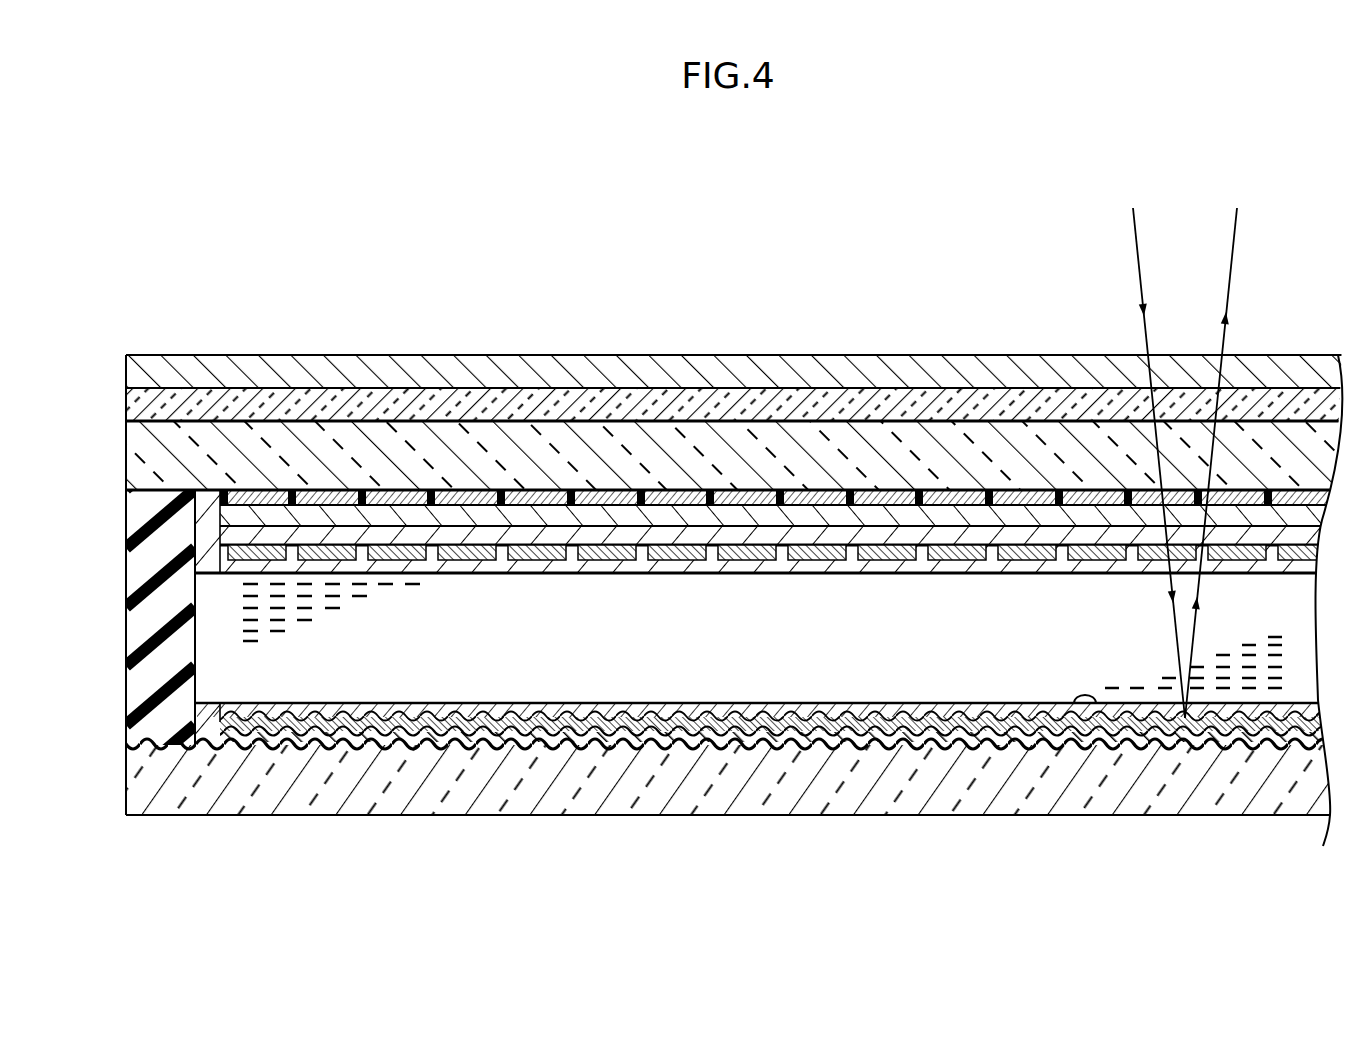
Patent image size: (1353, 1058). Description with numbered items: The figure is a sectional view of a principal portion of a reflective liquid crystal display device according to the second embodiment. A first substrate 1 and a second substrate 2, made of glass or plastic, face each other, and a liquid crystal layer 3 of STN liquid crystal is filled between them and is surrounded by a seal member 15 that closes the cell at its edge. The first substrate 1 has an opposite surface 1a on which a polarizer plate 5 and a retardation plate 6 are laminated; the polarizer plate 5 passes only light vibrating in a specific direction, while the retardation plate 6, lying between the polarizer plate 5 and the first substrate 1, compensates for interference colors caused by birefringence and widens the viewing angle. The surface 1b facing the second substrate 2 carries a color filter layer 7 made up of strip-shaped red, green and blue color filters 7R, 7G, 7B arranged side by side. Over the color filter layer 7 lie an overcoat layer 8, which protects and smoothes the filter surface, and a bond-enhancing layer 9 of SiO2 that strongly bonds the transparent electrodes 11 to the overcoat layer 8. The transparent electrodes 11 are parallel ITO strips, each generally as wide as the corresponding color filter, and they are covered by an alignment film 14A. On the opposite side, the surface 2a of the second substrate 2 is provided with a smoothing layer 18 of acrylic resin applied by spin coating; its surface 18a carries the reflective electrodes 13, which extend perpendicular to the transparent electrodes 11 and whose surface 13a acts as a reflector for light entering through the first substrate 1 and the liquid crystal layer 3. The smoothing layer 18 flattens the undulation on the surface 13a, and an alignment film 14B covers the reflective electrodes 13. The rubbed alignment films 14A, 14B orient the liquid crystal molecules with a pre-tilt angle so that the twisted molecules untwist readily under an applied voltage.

The first substrate 1 is at (455, 435).
The opposite surface of first substrate 1a is at (482, 420).
The surface of first substrate facing second substrate 1b is at (508, 492).
The second substrate 2 is at (433, 813).
The surface of second substrate 2a is at (503, 746).
The liquid crystal layer 3 is at (645, 670).
The polarizer plate 5 is at (171, 368).
The retardation plate 6 is at (200, 404).
The color filter layer 7 is at (631, 497).
The red color filter 7R is at (270, 490).
The green color filter 7G is at (344, 490).
The blue color filter 7B is at (397, 490).
The overcoat layer 8 is at (572, 516).
The bond-enhancing layer 9 is at (591, 535).
The transparent electrodes 11 is at (537, 575).
The reflective electrodes 13 is at (1018, 747).
The surface of reflective electrode 13a is at (1101, 735).
The alignment film 14A is at (842, 575).
The alignment film 14B is at (742, 710).
The seal member 15 is at (126, 582).
The smoothing layer 18 is at (797, 733).
The surface of smoothing layer 18a is at (883, 733).